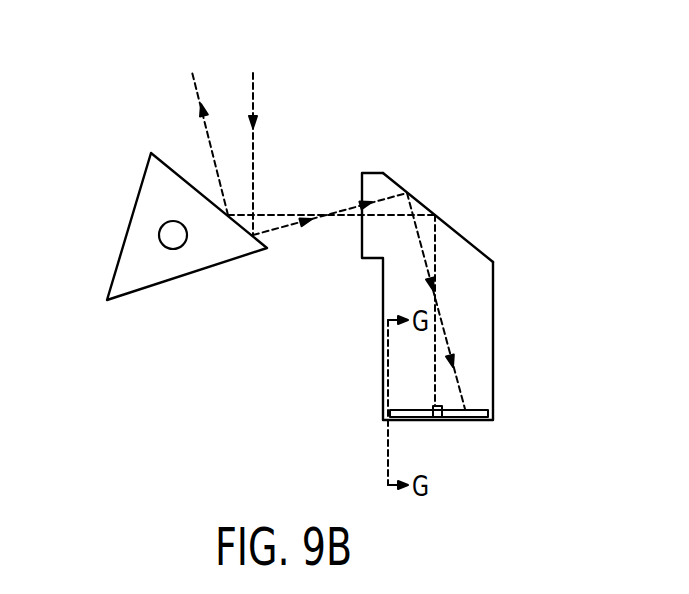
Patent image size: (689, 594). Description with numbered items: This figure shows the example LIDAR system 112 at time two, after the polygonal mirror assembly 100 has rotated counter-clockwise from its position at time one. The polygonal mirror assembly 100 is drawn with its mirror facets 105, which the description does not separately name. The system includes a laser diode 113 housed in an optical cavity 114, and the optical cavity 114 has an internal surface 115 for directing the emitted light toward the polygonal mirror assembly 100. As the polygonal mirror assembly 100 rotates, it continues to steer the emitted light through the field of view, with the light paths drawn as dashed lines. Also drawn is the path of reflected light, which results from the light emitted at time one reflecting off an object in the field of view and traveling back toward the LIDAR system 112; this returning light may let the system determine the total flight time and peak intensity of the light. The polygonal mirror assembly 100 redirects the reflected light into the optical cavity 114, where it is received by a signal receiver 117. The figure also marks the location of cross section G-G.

The polygonal mirror assembly 100 is at (104, 174).
The prism 105 is at (125, 227).
The LIDAR system 112 is at (461, 256).
The laser diode 113 is at (441, 418).
The optical cavity 114 is at (494, 341).
The internal surface 115 is at (472, 246).
The signal receiver 117 is at (478, 418).